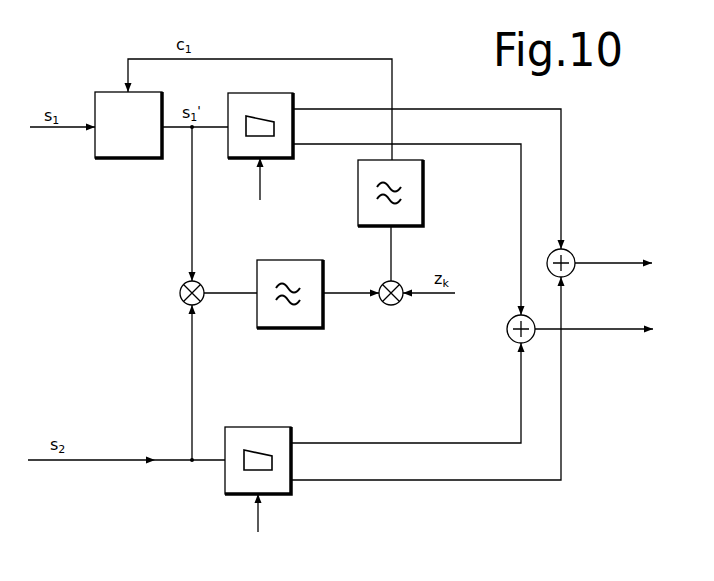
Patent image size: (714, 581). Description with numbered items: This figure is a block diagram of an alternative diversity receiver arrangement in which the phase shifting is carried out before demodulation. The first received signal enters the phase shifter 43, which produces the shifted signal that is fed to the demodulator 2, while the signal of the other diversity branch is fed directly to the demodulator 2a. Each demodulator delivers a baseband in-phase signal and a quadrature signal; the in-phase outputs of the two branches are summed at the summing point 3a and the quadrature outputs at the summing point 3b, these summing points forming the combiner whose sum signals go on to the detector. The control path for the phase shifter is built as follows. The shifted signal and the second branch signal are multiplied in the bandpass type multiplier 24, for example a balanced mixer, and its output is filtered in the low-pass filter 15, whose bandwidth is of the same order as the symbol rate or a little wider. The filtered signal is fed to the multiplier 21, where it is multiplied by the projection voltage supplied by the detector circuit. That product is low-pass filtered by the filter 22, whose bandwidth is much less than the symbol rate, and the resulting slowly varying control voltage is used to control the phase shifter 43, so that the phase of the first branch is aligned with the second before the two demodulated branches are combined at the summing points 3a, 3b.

The phase shifter 43 is at (120, 160).
The demodulator 2 is at (243, 158).
The demodulator 2a is at (225, 486).
The low-pass filter 22 is at (423, 206).
The low-pass filter 15 is at (320, 328).
The bandpass type multiplier 24 is at (184, 304).
The multiplier 21 is at (388, 305).
The summing point 3a is at (575, 250).
The summing point 3b is at (509, 329).